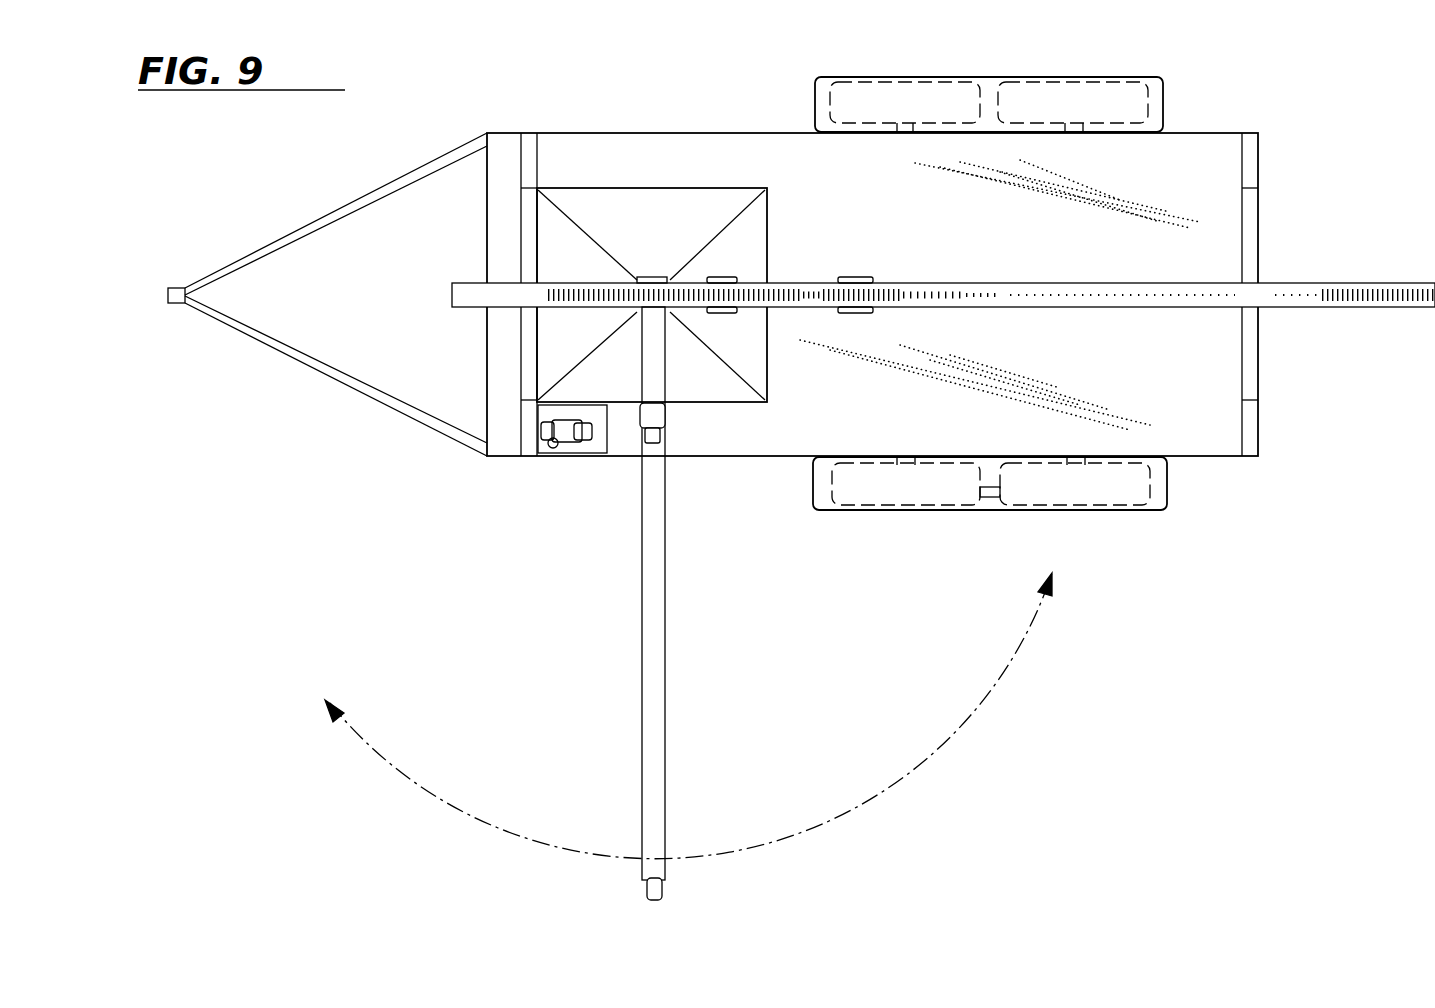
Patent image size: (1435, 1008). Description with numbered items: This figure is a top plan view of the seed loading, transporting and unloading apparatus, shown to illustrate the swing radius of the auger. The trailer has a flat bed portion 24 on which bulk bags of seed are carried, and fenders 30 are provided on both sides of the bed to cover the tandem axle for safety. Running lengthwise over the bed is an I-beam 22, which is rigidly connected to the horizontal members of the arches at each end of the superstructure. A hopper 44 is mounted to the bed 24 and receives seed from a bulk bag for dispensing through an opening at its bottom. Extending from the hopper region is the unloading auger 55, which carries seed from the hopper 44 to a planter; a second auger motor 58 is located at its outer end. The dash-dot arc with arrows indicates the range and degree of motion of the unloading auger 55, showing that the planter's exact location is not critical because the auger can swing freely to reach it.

The I-beam 22 is at (1010, 287).
The flat bed portion 24 is at (1183, 415).
The fenders 30 is at (1077, 100).
The hopper 44 is at (740, 260).
The unloading auger 55 is at (652, 660).
The second auger motor 58 is at (662, 897).